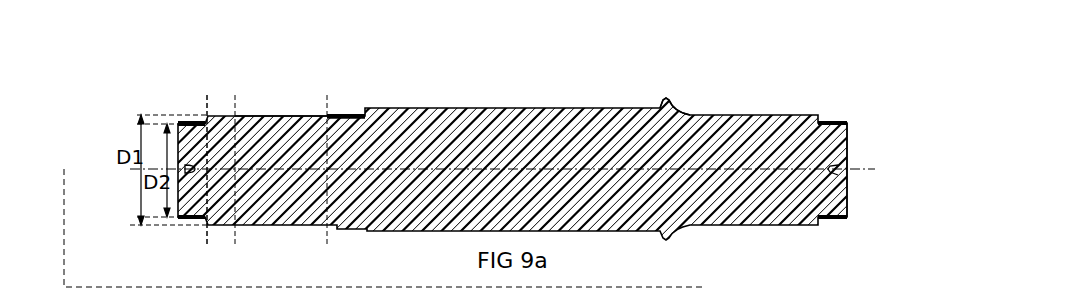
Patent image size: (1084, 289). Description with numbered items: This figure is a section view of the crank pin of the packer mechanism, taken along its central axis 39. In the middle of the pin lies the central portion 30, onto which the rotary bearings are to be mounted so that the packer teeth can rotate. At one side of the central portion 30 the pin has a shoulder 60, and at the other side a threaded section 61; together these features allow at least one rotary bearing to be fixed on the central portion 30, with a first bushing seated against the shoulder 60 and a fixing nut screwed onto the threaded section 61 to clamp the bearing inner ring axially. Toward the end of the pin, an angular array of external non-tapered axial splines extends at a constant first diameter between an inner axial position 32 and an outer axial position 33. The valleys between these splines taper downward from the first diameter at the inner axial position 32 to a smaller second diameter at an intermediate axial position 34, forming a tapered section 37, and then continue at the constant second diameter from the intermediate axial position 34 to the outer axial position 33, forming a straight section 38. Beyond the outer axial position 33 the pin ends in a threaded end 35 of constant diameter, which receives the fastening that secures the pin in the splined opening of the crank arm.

The central portion 30 is at (493, 130).
The inner axial position 32 is at (331, 185).
The outer axial position 33 is at (208, 185).
The intermediate axial position 34 is at (241, 185).
The threaded end 35 is at (188, 123).
The tapered section 37 is at (269, 115).
The straight section 38 is at (226, 115).
The central axis 39 is at (861, 165).
The shoulder 60 is at (670, 102).
The threaded section 61 is at (343, 113).